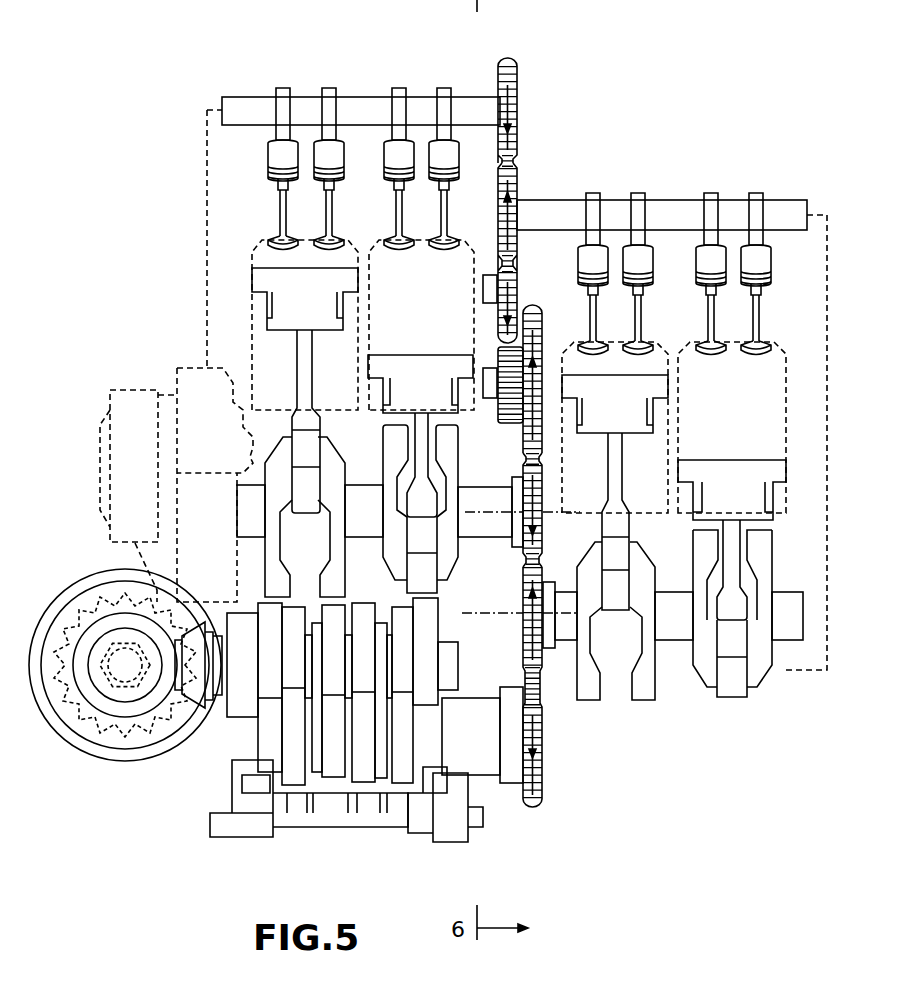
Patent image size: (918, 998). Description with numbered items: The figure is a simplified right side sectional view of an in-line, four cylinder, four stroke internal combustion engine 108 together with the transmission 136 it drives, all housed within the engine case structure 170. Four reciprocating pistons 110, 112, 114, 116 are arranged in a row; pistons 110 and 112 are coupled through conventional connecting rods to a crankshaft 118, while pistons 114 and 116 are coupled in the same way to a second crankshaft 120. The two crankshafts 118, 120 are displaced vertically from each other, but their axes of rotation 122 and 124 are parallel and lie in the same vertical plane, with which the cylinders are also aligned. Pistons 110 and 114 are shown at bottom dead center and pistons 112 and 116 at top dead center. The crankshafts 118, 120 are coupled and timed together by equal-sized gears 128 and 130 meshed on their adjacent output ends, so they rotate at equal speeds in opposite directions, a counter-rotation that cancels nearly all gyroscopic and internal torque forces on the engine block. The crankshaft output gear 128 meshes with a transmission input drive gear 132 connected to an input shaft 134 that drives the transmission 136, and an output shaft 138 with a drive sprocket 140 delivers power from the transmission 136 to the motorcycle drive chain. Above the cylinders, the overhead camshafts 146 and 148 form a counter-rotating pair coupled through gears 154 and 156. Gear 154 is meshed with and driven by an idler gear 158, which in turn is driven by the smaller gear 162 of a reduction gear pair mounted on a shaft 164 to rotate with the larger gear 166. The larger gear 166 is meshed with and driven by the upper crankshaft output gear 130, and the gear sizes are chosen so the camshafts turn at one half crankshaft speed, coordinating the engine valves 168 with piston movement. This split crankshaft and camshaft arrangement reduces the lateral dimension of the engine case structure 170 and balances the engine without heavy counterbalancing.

The internal combustion engine 108 is at (176, 259).
The piston 110 is at (757, 468).
The piston 112 is at (660, 383).
The piston 114 is at (388, 354).
The piston 116 is at (352, 282).
The crankshaft 118 is at (675, 633).
The second crankshaft 120 is at (360, 493).
The axis of rotation 122 is at (493, 615).
The axis of rotation 124 is at (488, 515).
The crankshaft output gear 128 is at (523, 592).
The upper crankshaft output gear 130 is at (543, 497).
The transmission input drive gear 132 is at (543, 732).
The input shaft 134 is at (488, 765).
The transmission 136 is at (300, 843).
The output shaft 138 is at (183, 707).
The drive sprocket 140 is at (92, 737).
The camshaft 146 is at (677, 208).
The camshaft 148 is at (248, 100).
The camshaft gear 154 is at (517, 178).
The camshaft gear 156 is at (517, 77).
The idler gear 158 is at (498, 320).
The smaller gear of reduction gear pair 162 is at (493, 423).
The shaft 164 is at (483, 388).
The larger gear of reduction gear pair 166 is at (540, 306).
The engine valves 168 is at (386, 240).
The engine case structure 170 is at (800, 672).